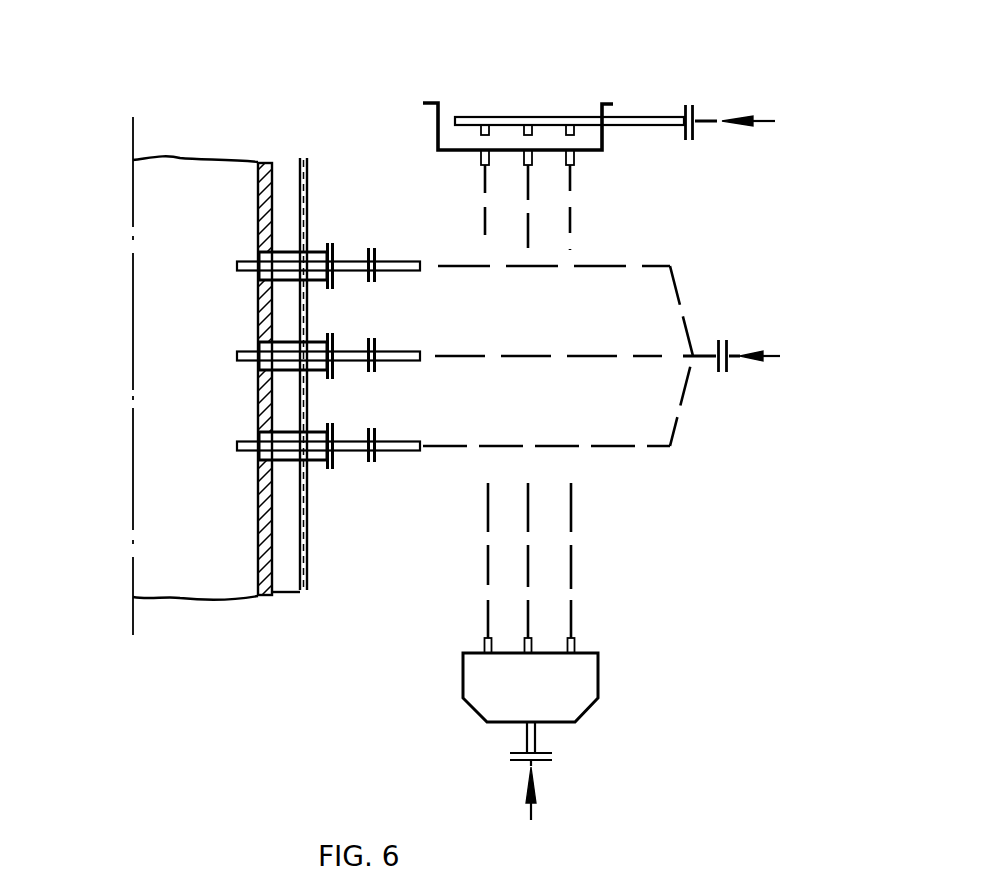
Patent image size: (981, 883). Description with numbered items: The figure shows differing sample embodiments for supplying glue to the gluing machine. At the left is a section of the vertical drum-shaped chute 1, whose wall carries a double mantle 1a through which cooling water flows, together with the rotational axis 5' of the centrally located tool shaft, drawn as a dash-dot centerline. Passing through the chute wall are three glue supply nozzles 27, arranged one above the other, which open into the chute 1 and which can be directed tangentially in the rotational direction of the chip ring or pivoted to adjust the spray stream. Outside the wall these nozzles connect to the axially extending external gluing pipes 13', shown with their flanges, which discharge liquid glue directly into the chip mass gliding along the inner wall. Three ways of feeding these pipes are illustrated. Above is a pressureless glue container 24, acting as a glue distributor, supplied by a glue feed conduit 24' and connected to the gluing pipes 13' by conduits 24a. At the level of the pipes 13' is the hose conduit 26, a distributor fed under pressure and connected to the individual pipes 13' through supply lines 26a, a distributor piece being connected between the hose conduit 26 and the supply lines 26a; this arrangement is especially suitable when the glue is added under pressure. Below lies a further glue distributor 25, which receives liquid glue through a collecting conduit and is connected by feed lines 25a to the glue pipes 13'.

The drum-shaped chute 1 is at (307, 172).
The double mantle 1a is at (282, 178).
The rotational axis 5' is at (88, 376).
The glue supply nozzles 27 is at (230, 267).
The external gluing pipes 13' is at (357, 356).
The glue container 24 is at (538, 93).
The glue feed conduit 24' is at (731, 73).
The conduits 24a is at (488, 178).
The hose conduit 26 is at (742, 362).
The supply lines 26a is at (652, 447).
The glue distributor 25 is at (578, 690).
The feed lines 25a is at (488, 510).